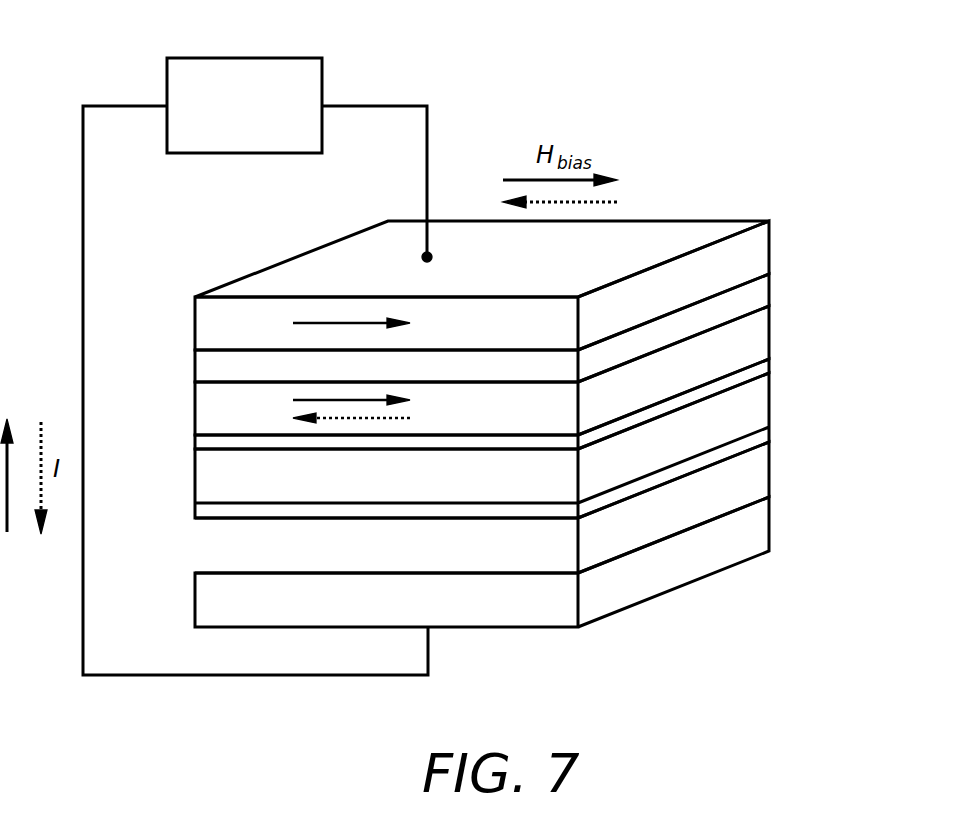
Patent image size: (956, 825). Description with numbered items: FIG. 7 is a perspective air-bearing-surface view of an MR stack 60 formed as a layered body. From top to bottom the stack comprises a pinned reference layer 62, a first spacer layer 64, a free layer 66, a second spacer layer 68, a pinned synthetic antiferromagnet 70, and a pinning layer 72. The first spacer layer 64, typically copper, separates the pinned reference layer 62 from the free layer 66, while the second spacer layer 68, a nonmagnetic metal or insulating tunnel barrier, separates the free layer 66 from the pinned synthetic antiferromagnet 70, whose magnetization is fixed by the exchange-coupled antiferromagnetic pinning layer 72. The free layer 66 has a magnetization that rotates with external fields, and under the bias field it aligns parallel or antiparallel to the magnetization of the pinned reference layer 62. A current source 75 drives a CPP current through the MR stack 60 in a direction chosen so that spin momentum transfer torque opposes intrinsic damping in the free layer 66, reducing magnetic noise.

The MR stack 60 is at (535, 359).
The pinned reference layer 62 is at (758, 253).
The first spacer layer 64 is at (758, 295).
The free layer 66 is at (758, 338).
The second spacer layer 68 is at (758, 368).
The pinned synthetic antiferromagnet 70 is at (773, 493).
The pinning layer 72 is at (752, 537).
The current source 75 is at (322, 80).